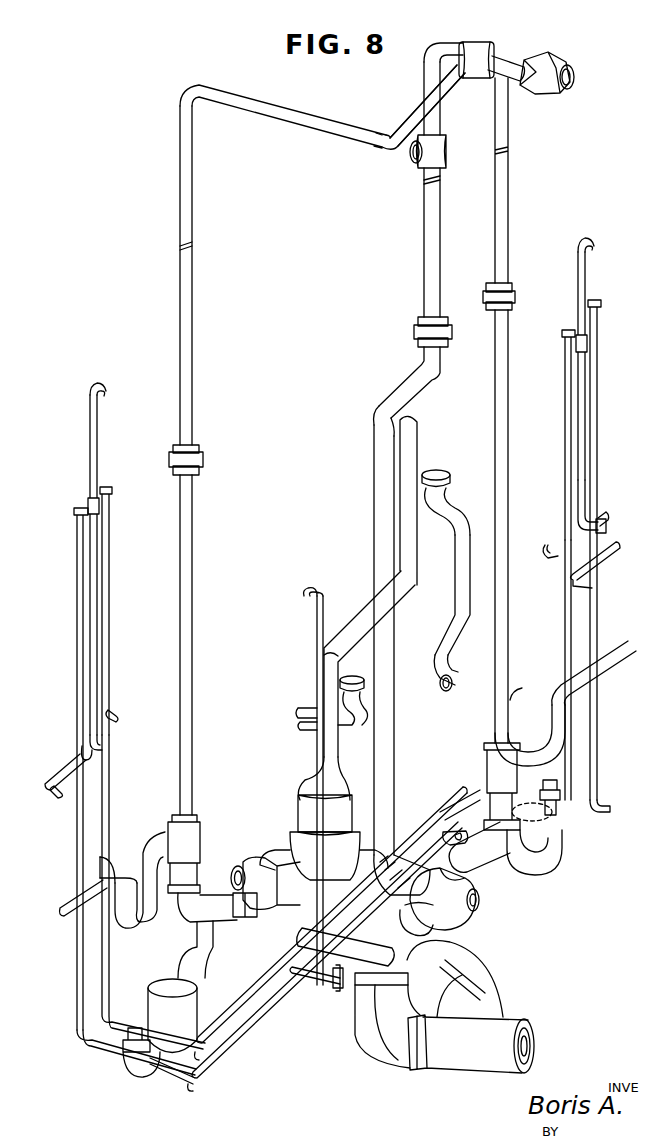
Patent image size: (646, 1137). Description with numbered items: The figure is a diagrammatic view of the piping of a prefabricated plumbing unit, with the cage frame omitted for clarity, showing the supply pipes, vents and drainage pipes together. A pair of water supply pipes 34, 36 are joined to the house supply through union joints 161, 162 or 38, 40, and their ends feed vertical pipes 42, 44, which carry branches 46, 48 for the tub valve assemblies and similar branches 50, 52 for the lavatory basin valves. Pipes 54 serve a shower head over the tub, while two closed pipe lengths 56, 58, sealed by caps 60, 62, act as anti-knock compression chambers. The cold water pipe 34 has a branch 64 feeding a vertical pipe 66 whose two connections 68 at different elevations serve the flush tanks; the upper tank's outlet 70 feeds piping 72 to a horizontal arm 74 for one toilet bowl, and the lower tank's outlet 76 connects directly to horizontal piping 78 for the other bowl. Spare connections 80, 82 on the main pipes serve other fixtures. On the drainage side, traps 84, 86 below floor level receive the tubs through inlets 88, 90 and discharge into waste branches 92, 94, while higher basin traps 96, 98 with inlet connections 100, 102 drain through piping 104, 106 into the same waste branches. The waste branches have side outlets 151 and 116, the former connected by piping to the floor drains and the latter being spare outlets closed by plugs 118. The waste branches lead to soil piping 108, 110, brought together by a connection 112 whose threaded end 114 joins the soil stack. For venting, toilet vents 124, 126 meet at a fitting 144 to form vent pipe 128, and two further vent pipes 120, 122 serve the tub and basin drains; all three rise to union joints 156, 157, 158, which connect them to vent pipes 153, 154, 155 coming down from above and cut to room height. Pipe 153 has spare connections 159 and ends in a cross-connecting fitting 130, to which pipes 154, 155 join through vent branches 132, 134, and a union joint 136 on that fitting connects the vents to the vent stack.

The water supply pipe 34 is at (265, 986).
The water supply pipe 36 is at (254, 1012).
The union joint 38 is at (460, 790).
The union joint 40 is at (486, 768).
The vertical pipe 42 is at (565, 630).
The vertical pipe 44 is at (598, 612).
The branch 46 is at (550, 557).
The branch 48 is at (596, 516).
The branch 50 is at (606, 550).
The branch 52 is at (609, 516).
The pipe 54 is at (586, 282).
The pipe length 56 is at (565, 478).
The pipe length 58 is at (598, 452).
The cap 60 is at (562, 328).
The cap 62 is at (602, 300).
The branch 64 is at (312, 976).
The vertical pipe 66 is at (302, 775).
The connection 68 is at (304, 594).
The outlet 70 is at (445, 473).
The piping 72 is at (458, 524).
The horizontal arm 74 is at (438, 685).
The outlet 76 is at (354, 676).
The horizontal piping 78 is at (298, 708).
The spare connection 80 is at (172, 1080).
The spare connection 82 is at (193, 1092).
The trap 84 is at (196, 1014).
The trap 86 is at (543, 860).
The inlet 88 is at (136, 1026).
The inlet 90 is at (558, 787).
The waste branch 92 is at (236, 942).
The waste branch 94 is at (477, 868).
The trap 96 is at (147, 926).
The trap 98 is at (528, 722).
The connection 100 is at (60, 895).
The connection 102 is at (605, 655).
The piping 104 is at (198, 870).
The piping 106 is at (463, 831).
The soil piping 108 is at (297, 812).
The soil piping 110 is at (375, 1020).
The connection 112 is at (450, 1064).
The threaded end 114 is at (532, 1046).
The outlet 116 is at (262, 858).
The plug 118 is at (231, 882).
The vent pipe 120 is at (193, 613).
The vent pipe 122 is at (509, 519).
The toilet vent 124 is at (372, 556).
The toilet vent 126 is at (412, 459).
The vent pipe 128 is at (434, 379).
The cross-connecting fitting 130 is at (472, 44).
The vent branch 132 is at (382, 134).
The vent branch 134 is at (503, 56).
The union joint 136 is at (560, 60).
The fitting 144 is at (399, 399).
The side outlet 151 is at (268, 918).
The vent pipe 153 is at (424, 214).
The vent pipe 154 is at (194, 272).
The vent pipe 155 is at (509, 156).
The union joint 156 is at (414, 334).
The union joint 157 is at (201, 462).
The union joint 158 is at (513, 296).
The spare connection 159 is at (447, 153).
The union joint 161 is at (334, 990).
The union joint 162 is at (398, 850).